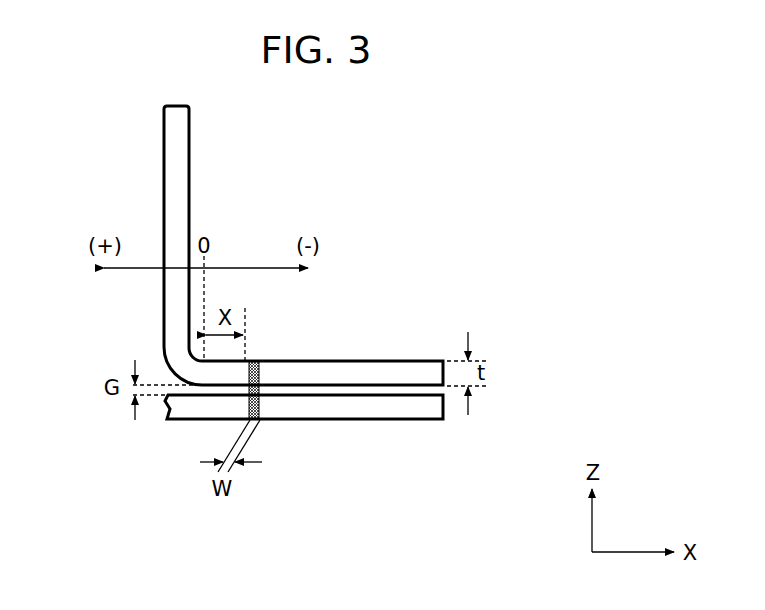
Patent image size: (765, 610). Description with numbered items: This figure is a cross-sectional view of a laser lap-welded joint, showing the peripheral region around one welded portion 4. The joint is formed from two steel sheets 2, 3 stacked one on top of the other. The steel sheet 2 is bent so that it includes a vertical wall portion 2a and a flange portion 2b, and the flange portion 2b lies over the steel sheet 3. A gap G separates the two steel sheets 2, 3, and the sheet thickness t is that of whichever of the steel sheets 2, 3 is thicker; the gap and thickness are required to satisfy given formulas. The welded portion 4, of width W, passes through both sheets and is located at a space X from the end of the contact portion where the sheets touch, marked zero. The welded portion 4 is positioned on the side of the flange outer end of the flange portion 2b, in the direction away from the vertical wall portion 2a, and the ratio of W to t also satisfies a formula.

The steel sheet 2 is at (241, 245).
The vertical wall portion 2a is at (163, 148).
The flange portion 2b is at (345, 361).
The steel sheet 3 is at (191, 419).
The welded portion 4 is at (255, 361).